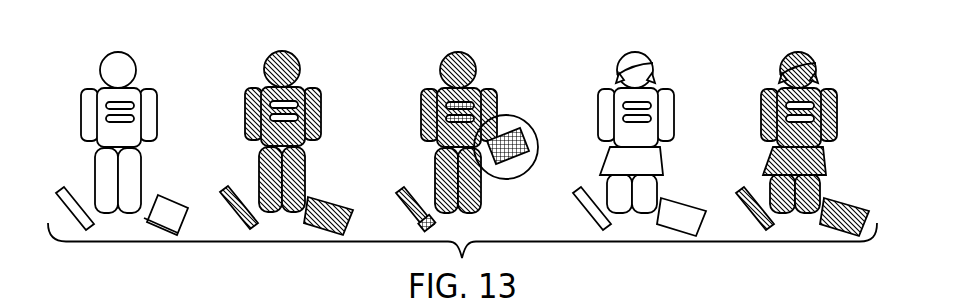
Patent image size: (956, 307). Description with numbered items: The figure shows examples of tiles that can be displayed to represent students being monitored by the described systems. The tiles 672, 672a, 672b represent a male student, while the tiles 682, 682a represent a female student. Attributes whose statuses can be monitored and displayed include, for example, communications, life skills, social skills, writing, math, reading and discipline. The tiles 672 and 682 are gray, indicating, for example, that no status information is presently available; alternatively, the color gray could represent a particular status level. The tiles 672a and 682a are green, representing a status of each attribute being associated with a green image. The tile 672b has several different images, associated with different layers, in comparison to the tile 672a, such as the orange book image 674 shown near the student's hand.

The toy figure / robot body 672 is at (108, 166).
The toy figure variant (hatched) 672a is at (300, 88).
The toy figure variant with gripping hand 672b is at (465, 62).
The hand with cross-hatched grip surface 674 is at (523, 173).
The toy figure with skirt 682 is at (637, 60).
The toy figure with skirt variant (hatched) 682a is at (802, 58).